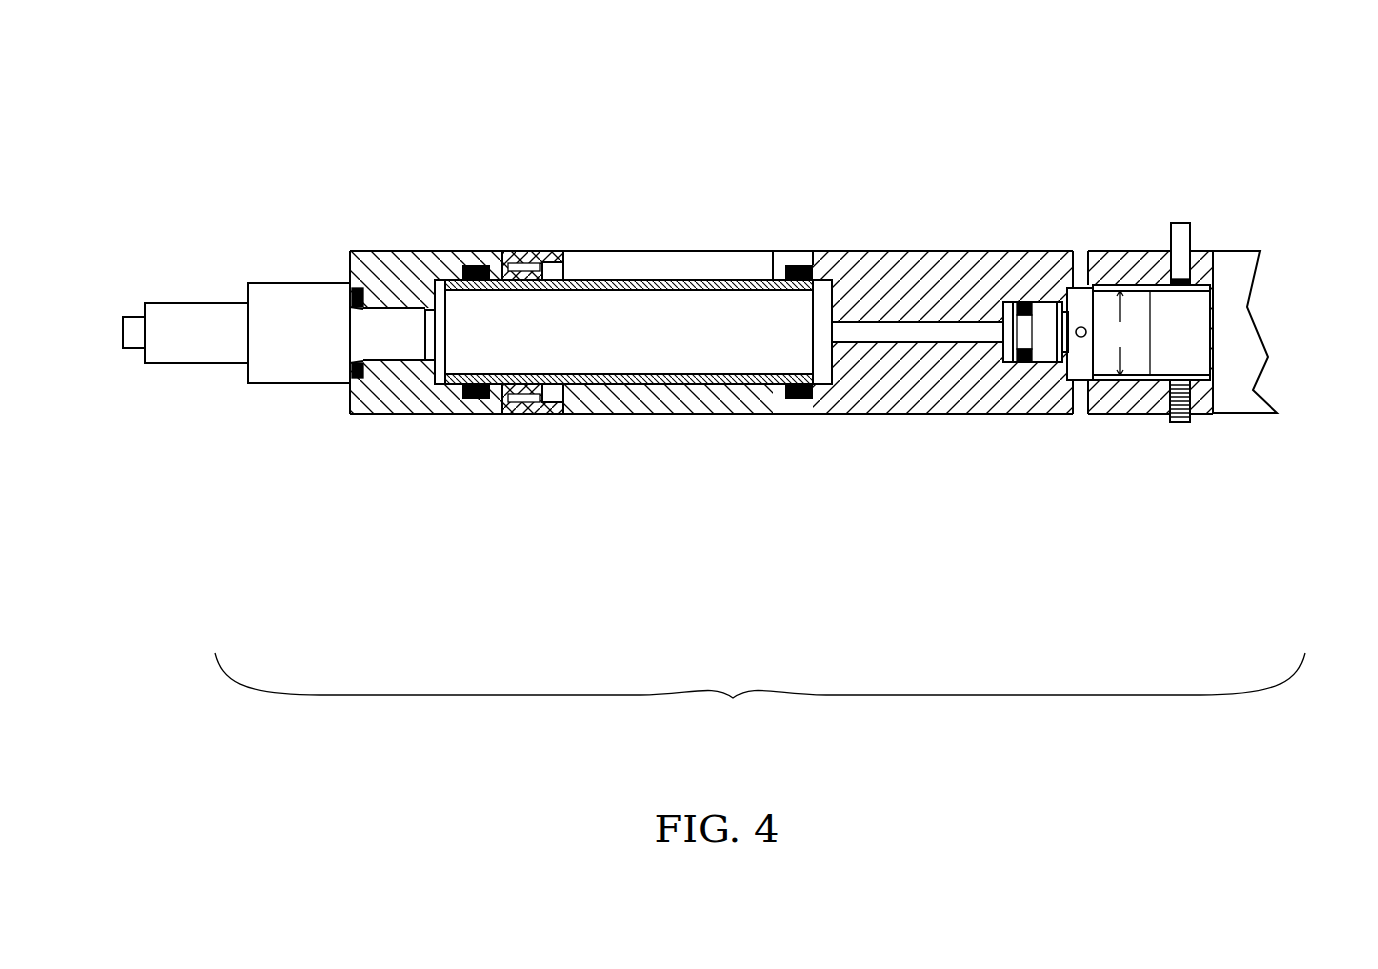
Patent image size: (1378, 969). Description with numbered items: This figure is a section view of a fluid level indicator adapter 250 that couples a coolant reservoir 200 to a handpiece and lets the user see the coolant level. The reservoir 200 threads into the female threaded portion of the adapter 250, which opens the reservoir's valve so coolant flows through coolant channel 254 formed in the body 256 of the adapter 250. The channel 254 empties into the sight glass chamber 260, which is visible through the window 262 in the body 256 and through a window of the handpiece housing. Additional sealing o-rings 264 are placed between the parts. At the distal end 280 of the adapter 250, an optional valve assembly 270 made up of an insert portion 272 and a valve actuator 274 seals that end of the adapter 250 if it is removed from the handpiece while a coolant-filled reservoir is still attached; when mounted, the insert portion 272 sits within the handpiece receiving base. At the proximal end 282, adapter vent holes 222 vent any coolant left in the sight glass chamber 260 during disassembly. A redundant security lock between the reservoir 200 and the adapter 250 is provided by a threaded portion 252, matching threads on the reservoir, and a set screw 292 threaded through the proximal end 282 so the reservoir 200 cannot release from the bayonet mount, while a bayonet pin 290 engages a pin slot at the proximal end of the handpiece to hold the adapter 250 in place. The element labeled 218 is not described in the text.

The reservoir 200 is at (1273, 242).
The valve 218 is at (1027, 306).
The adapter vent holes 222 is at (1085, 328).
The fluid level indicator adapter 250 is at (760, 689).
The threaded portion 252 is at (1151, 332).
The coolant channel 254 is at (873, 332).
The body 256 is at (964, 265).
The sight glass chamber 260 is at (633, 332).
The window 262 is at (660, 265).
The sealing o-rings 264 is at (478, 268).
The valve assembly 270 is at (193, 336).
The insert portion 272 is at (302, 333).
The valve actuator 274 is at (143, 340).
The distal end 280 is at (245, 270).
The proximal end 282 is at (1177, 337).
The bayonet pin 290 is at (1183, 238).
The set screw 292 is at (1182, 425).